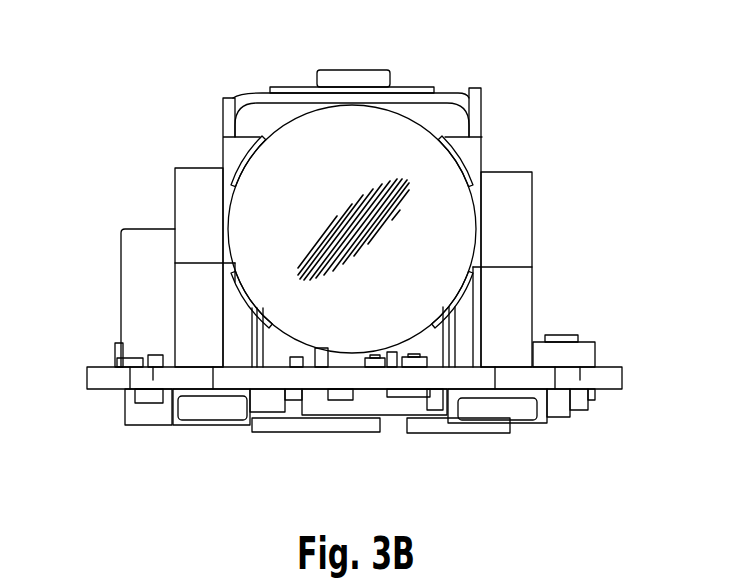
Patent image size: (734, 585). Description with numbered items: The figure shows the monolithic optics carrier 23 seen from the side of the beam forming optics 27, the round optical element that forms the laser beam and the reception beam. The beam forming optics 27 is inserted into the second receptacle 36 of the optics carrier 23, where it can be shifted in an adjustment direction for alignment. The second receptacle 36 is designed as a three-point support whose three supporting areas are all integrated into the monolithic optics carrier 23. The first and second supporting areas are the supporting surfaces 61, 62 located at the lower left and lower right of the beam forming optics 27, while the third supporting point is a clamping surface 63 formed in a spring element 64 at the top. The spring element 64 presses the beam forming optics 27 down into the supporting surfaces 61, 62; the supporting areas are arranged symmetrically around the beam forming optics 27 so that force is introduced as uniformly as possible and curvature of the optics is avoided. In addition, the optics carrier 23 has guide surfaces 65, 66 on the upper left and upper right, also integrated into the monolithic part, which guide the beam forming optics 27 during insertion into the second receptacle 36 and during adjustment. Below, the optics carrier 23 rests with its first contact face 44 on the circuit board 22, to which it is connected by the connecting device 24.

The circuit board 22 is at (356, 378).
The optics carrier 23 is at (141, 257).
The connecting device 24 is at (220, 407).
The beam forming optics 27 is at (450, 230).
The second receptacle 36 is at (447, 122).
The first contact face 44 is at (192, 395).
The supporting surface 61 is at (231, 296).
The supporting surface 62 is at (473, 296).
The clamping surface 63 is at (356, 96).
The spring element 64 is at (260, 97).
The guide surface 65 is at (241, 163).
The guide surface 66 is at (471, 163).